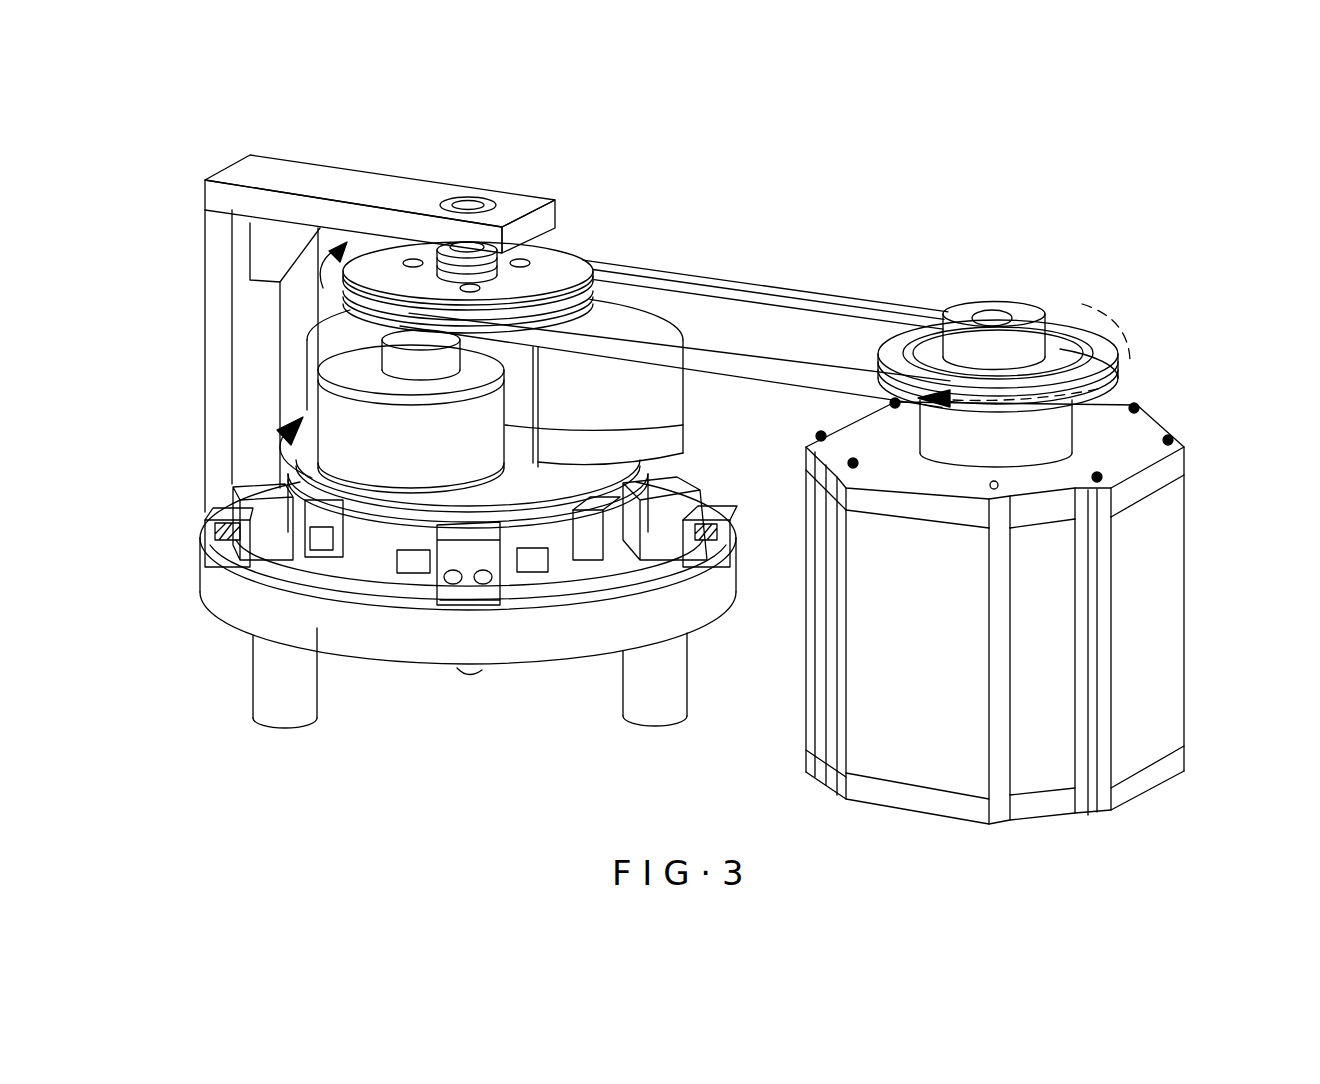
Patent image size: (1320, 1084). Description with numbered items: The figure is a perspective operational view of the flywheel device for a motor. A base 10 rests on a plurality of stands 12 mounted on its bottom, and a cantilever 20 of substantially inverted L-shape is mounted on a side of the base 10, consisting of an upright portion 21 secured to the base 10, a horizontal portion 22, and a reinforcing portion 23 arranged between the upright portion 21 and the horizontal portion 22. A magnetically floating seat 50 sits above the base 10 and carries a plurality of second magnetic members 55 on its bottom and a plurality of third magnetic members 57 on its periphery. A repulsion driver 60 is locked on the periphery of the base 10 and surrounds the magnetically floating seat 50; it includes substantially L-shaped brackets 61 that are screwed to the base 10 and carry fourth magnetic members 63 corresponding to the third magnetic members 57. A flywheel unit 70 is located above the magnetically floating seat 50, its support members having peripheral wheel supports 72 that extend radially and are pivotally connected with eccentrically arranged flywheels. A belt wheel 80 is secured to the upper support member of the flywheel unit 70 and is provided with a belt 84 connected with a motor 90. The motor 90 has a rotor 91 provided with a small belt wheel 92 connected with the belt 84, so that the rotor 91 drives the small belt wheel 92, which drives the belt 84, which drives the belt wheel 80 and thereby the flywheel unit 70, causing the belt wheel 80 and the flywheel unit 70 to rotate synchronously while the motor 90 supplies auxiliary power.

The base 10 is at (731, 573).
The stands 12 is at (636, 690).
The cantilever 20 is at (214, 169).
The upright portion 21 is at (213, 378).
The horizontal portion 22 is at (403, 188).
The reinforcing portion 23 is at (276, 246).
The magnetically floating seat 50 is at (387, 557).
The second magnetic members 55 is at (530, 563).
The third magnetic members 57 is at (640, 480).
The repulsion driver 60 is at (457, 620).
The brackets 61 is at (688, 513).
The fourth magnetic members 63 is at (661, 492).
The flywheel unit 70 is at (683, 314).
The wheel supports 72 is at (408, 360).
The belt wheel 80 is at (551, 257).
The belt 84 is at (835, 296).
The motor 90 is at (1162, 568).
The rotor 91 is at (997, 304).
The small belt wheel 92 is at (888, 350).